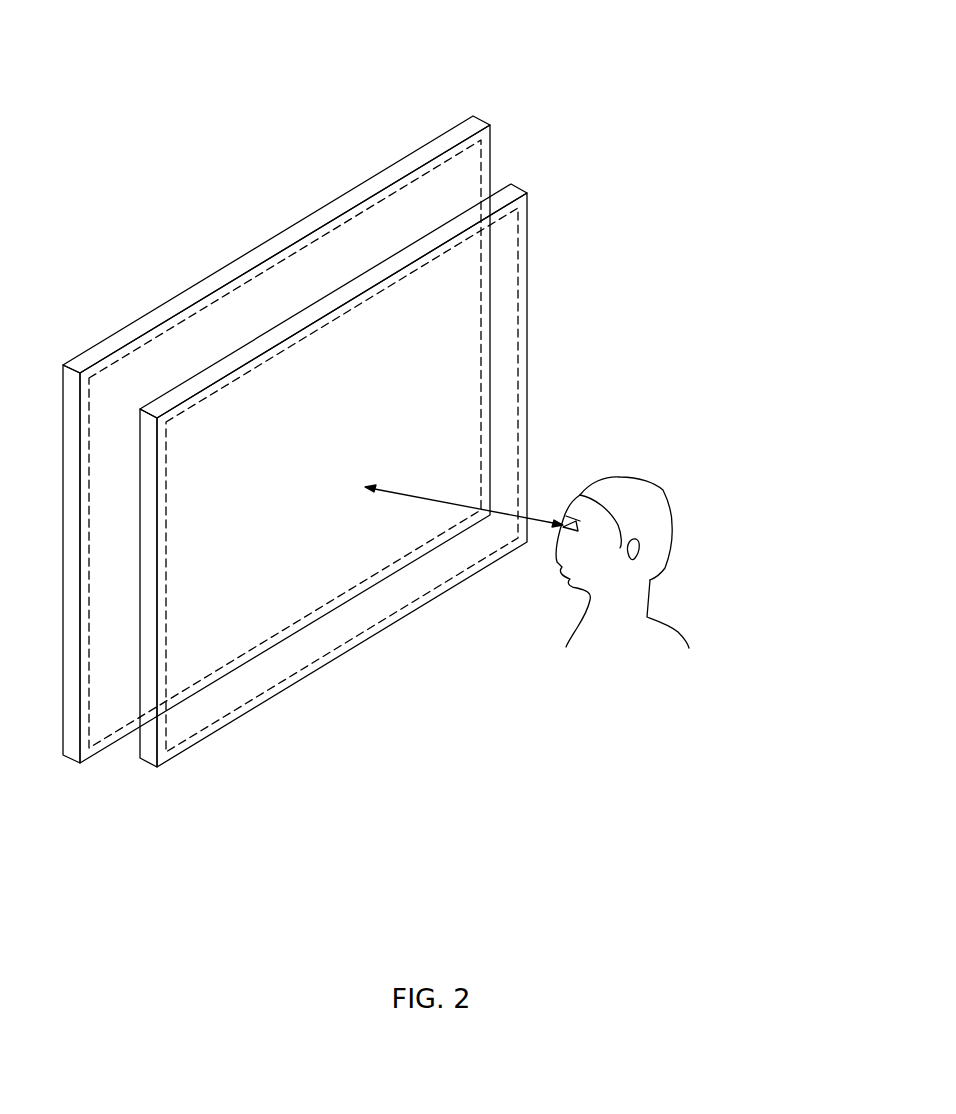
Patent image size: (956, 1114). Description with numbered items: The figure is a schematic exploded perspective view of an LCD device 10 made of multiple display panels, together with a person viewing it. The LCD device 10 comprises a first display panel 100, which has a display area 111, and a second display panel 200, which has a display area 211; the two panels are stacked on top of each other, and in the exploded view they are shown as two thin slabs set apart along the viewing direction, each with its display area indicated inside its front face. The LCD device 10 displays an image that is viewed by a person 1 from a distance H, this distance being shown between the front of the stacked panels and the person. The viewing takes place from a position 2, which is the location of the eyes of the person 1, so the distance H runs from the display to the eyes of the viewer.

The LCD device 10 is at (370, 475).
The first display panel 100 is at (409, 442).
The display area 111 is at (518, 280).
The second display panel 200 is at (278, 388).
The display area 211 is at (278, 265).
The person 1 is at (683, 520).
The position 2 is at (568, 524).
The distance H is at (455, 505).